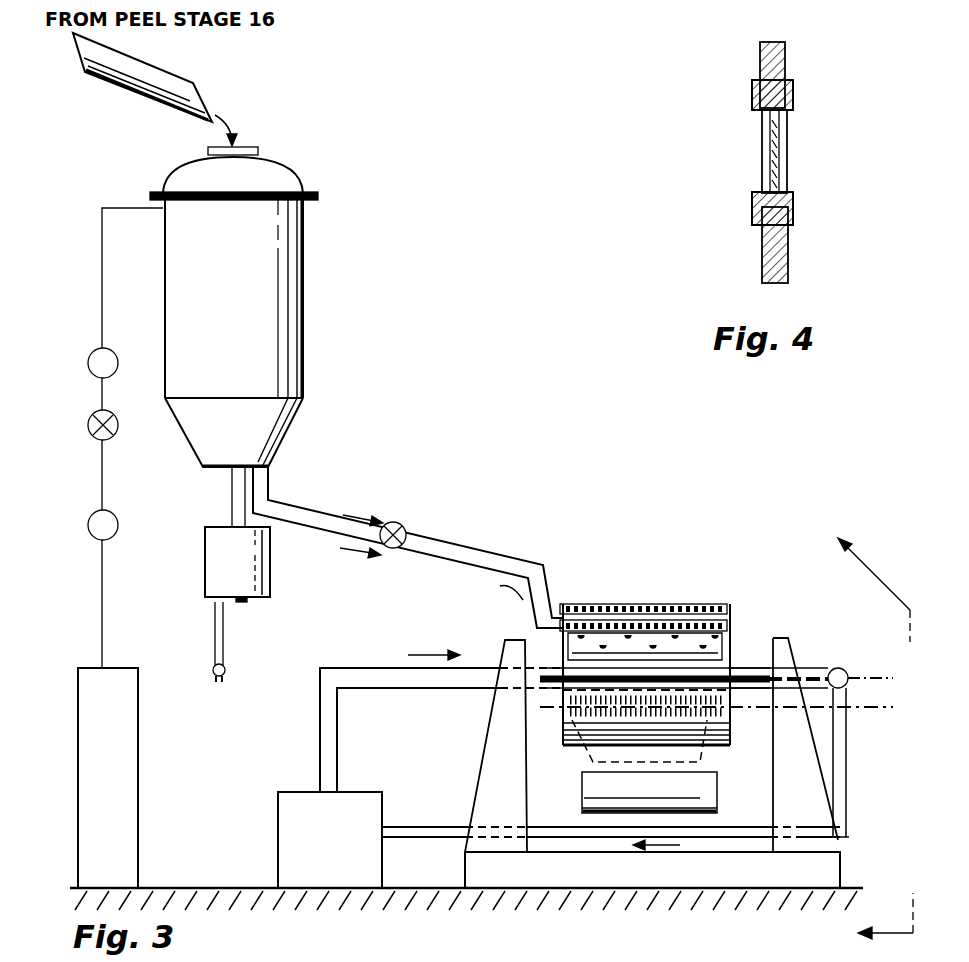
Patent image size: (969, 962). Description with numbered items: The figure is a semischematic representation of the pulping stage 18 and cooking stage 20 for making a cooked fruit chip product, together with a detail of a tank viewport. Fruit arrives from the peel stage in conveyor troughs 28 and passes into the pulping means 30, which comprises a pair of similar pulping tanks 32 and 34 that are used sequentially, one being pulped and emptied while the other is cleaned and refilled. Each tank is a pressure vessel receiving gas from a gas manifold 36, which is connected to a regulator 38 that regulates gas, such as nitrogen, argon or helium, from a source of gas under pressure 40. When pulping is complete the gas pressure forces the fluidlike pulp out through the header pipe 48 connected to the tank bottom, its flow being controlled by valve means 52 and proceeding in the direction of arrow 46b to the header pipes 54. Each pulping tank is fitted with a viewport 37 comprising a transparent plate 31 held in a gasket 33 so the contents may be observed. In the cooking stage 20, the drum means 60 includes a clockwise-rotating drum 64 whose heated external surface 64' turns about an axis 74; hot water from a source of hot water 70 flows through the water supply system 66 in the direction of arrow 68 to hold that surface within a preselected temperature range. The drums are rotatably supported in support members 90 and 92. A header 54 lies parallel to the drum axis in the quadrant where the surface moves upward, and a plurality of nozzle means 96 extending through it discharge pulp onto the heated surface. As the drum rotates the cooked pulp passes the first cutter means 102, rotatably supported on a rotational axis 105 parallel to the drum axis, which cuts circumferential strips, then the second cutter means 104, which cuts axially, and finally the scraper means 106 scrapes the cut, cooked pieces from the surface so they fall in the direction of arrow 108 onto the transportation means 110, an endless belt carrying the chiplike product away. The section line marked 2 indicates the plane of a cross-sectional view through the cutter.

In FIG. 3, the conveyor troughs 28 is at (172, 76).
In FIG. 3, the pulping stage 18 is at (355, 232).
In FIG. 3, the pulping means 30 is at (303, 295).
In FIG. 3, the pulping tank 34 is at (305, 350).
In FIG. 3, the gas manifold 36 is at (103, 305).
In FIG. 3, the regulator 38 is at (112, 518).
In FIG. 3, the source of gas under pressure 40 is at (121, 668).
In FIG. 3, the header pipe 48 is at (316, 514).
In FIG. 3, the valve means 52 is at (400, 528).
In FIG. 3, the arrow 46b is at (348, 563).
In FIG. 3, the cooking stage 20 is at (631, 536).
In FIG. 3, the drum 64 is at (642, 574).
In FIG. 3, the heated external surface 64' is at (643, 594).
In FIG. 3, the nozzle means 96 is at (647, 604).
In FIG. 3, the drum means 60 is at (727, 604).
In FIG. 3, the header pipes 54 is at (722, 640).
In FIG. 3, the scraper means 106 is at (722, 668).
In FIG. 3, the second cutter means 104 is at (722, 676).
In FIG. 3, the axis 74 is at (865, 676).
In FIG. 3, the rotational axis 105 is at (868, 712).
In FIG. 3, the first cutter means 102 is at (708, 714).
In FIG. 3, the arrow 108 is at (585, 762).
In FIG. 3, the transportation means 110 is at (723, 800).
In FIG. 3, the water supply system 66 is at (360, 668).
In FIG. 3, the arrow 68 is at (414, 654).
In FIG. 3, the source of hot water 70 is at (358, 792).
In FIG. 3, the support member 90 is at (482, 760).
In FIG. 3, the support member 92 is at (820, 795).
In FIG. 3, the section line 2- 2 is at (864, 735).
In FIG. 4, the pulping tank 32 is at (785, 60).
In FIG. 4, the viewport 37 is at (793, 92).
In FIG. 4, the transparent plate 31 is at (790, 162).
In FIG. 4, the gasket 33 is at (795, 202).